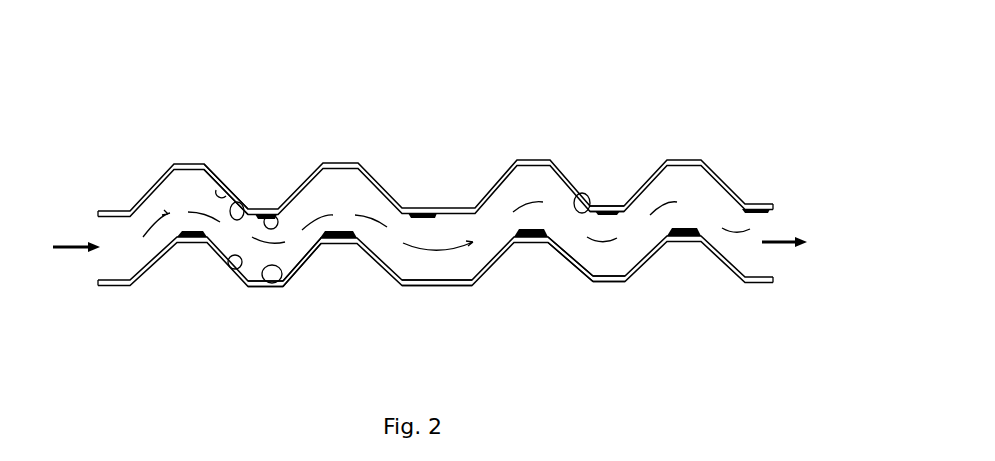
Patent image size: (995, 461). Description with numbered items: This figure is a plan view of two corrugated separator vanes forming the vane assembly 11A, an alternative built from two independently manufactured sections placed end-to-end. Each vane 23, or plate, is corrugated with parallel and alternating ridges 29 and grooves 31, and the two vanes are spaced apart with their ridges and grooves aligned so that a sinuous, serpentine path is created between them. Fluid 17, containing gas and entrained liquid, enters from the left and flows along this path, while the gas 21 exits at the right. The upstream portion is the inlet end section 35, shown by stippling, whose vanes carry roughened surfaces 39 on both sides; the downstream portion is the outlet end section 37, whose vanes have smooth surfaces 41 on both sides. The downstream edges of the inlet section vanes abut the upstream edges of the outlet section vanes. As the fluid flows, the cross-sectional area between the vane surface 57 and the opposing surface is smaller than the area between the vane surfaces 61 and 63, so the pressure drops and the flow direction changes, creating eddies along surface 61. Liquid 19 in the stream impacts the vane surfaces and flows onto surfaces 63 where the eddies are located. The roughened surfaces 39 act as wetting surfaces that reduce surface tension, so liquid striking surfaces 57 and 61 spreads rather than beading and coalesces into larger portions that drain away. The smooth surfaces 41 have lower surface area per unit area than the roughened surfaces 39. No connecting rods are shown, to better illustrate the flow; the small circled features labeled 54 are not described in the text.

The vane assembly 11A is at (693, 96).
The inlet end section 35 is at (150, 142).
The outlet end section 37 is at (744, 167).
The vane surface 57 is at (218, 170).
The liquid 19 is at (236, 203).
The vane surface 61 is at (275, 210).
The vane surface 63 is at (282, 288).
The bond joint 54 is at (232, 268).
The ridge 29 is at (186, 242).
The groove 31 is at (608, 207).
The roughened surface 39 is at (313, 257).
The vane 23 is at (417, 283).
The smooth surface 41 is at (582, 275).
The fluid 17 is at (76, 243).
The gas 21 is at (792, 242).